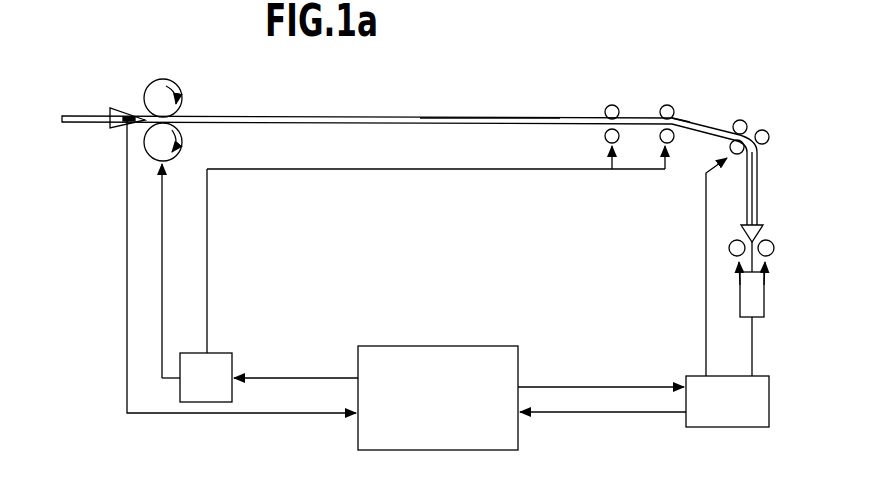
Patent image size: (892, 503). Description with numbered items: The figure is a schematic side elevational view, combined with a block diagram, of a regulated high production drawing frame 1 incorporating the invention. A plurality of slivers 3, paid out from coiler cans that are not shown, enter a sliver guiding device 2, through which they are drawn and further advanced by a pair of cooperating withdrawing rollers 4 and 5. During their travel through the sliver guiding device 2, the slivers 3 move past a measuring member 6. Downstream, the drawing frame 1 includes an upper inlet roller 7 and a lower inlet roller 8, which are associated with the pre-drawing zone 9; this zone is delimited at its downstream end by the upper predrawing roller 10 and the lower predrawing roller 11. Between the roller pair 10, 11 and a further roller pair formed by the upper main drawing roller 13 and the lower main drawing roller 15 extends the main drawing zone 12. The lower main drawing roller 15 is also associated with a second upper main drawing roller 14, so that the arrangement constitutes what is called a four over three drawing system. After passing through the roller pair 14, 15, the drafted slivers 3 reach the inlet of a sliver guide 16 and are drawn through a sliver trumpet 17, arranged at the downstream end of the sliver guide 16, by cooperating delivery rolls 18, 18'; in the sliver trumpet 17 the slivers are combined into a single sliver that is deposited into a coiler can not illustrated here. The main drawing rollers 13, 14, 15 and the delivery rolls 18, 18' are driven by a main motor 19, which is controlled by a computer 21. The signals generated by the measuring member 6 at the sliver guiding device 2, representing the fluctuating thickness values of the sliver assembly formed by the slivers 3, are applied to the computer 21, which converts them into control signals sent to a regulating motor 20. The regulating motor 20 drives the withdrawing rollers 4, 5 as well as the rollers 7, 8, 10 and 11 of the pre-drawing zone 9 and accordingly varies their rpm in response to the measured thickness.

The drawing frame 1 is at (756, 100).
The sliver guiding device 2 is at (112, 108).
The slivers 3 is at (80, 114).
The withdrawing roller 4 is at (167, 95).
The withdrawing roller 5 is at (178, 146).
The measuring member 6 is at (127, 123).
The upper inlet roller 7 is at (604, 108).
The lower inlet roller 8 is at (606, 141).
The pre-drawing zone 9 is at (640, 117).
The upper predrawing roller 10 is at (667, 105).
The lower predrawing roller 11 is at (662, 140).
The main drawing zone 12 is at (698, 122).
The upper main drawing roller 13 is at (739, 119).
The second upper main drawing roller 14 is at (768, 132).
The lower main drawing roller 15 is at (727, 150).
The sliver guide 16 is at (761, 148).
The sliver trumpet 17 is at (760, 234).
The delivery roll 18 is at (708, 256).
The delivery roll 18' is at (710, 319).
The main motor 19 is at (705, 410).
The regulating motor 20 is at (212, 368).
The computer 21 is at (458, 368).